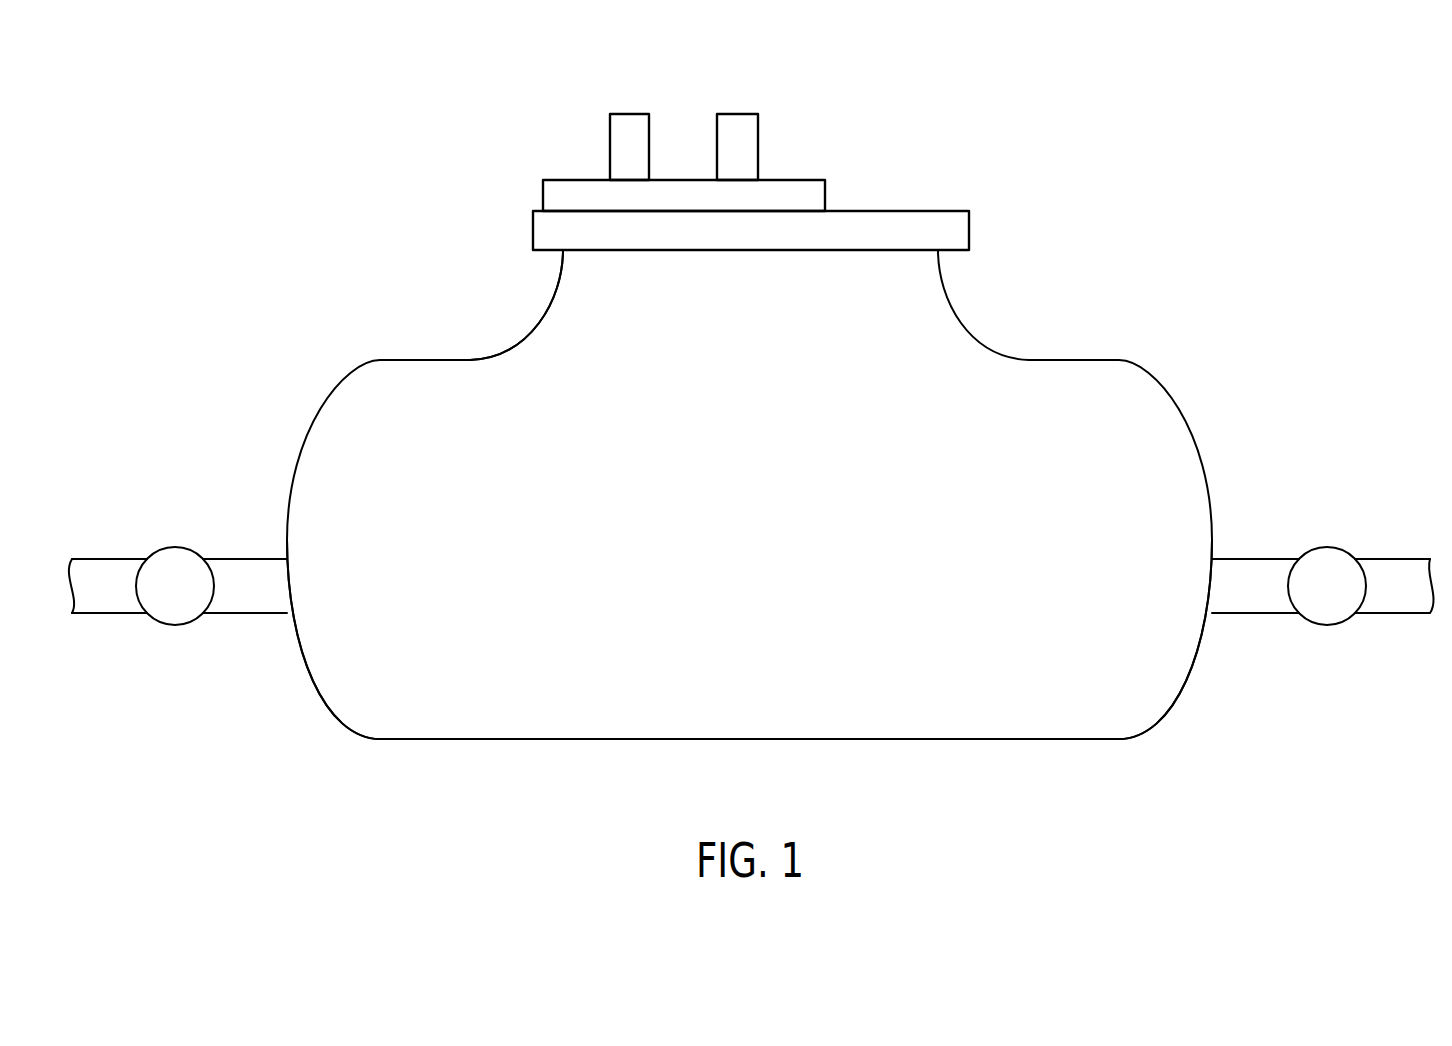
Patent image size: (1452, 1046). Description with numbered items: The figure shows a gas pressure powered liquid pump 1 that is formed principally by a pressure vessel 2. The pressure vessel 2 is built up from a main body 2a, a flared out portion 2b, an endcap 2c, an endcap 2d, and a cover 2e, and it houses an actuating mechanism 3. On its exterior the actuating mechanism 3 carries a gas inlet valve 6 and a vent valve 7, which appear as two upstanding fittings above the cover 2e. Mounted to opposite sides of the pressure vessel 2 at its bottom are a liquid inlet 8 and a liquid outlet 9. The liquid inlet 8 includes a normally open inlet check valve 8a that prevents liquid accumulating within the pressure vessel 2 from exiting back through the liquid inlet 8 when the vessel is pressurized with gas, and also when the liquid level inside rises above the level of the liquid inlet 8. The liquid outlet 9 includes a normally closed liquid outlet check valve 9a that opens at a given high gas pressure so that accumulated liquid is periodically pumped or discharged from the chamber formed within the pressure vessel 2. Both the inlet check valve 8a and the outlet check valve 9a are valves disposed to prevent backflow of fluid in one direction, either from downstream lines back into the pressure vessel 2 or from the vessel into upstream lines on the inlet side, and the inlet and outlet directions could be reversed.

The gas pressure powered liquid pump 1 is at (1185, 138).
The pressure vessel 2 is at (1143, 338).
The main body 2a is at (752, 724).
The flared out portion 2b is at (538, 322).
The endcap 2c is at (328, 705).
The endcap 2d is at (1163, 717).
The cover 2e is at (969, 211).
The actuating mechanism 3 is at (545, 170).
The gas inlet valve 6 is at (630, 112).
The vent valve 7 is at (740, 112).
The liquid inlet 8 is at (98, 614).
The inlet check valve 8a is at (172, 548).
The liquid outlet 9 is at (1397, 558).
The liquid outlet check valve 9a is at (1325, 548).